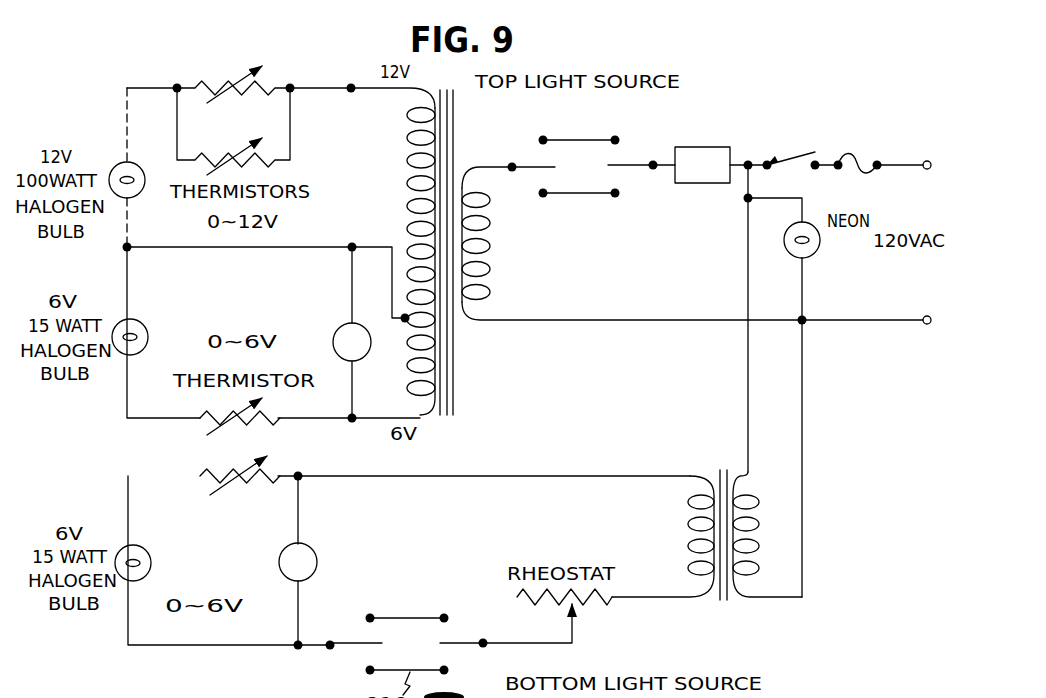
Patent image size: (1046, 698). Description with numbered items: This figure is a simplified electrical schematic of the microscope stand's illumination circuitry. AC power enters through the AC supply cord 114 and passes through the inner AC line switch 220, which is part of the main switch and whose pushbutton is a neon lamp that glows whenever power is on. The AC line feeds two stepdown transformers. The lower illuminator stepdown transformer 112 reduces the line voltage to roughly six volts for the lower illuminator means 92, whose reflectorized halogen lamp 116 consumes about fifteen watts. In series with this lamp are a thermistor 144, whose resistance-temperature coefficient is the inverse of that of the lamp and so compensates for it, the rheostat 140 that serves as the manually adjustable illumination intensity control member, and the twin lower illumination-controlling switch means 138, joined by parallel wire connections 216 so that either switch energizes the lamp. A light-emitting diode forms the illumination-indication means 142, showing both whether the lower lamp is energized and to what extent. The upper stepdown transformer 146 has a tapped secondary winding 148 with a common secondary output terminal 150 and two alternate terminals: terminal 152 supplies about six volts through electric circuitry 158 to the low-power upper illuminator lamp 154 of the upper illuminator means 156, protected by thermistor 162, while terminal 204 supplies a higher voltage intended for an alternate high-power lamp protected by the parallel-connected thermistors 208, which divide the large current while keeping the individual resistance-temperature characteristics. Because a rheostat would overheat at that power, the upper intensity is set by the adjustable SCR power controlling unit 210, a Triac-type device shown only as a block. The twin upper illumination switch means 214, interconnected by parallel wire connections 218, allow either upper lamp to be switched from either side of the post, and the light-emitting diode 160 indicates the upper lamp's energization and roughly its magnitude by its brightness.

The lower illuminator means 92 is at (130, 581).
The lower illuminator means stepdown transformer 112 is at (712, 460).
The AC supply cord 114 is at (906, 163).
The lower illuminator means lamp 116 is at (138, 545).
The lower illumination-controlling switch means 138 is at (358, 652).
The illumination intensity control member 140 is at (598, 617).
The illumination-indication means 142 is at (322, 548).
The thermistor 144 is at (245, 492).
The stepdown transformer 146 is at (463, 346).
The tapped secondary winding 148 is at (425, 405).
The secondary output terminal 150 is at (352, 244).
The secondary output terminal 152 is at (352, 419).
The upper illuminator means lamp 154 is at (140, 334).
The upper illuminator means 156 is at (124, 353).
The electric circuitry 158 is at (240, 248).
The light-emitting diode 160 is at (325, 332).
The thermistor 162 is at (205, 432).
The transformer terminal 204 is at (351, 85).
The thermistors 208 is at (221, 84).
The adjustable SCR power controlling unit 210 is at (718, 145).
The upper illumination switch means 214 is at (535, 157).
The parallel wire connections 216 is at (403, 615).
The parallel wire connections 218 is at (575, 139).
The AC line switch 220 is at (795, 148).